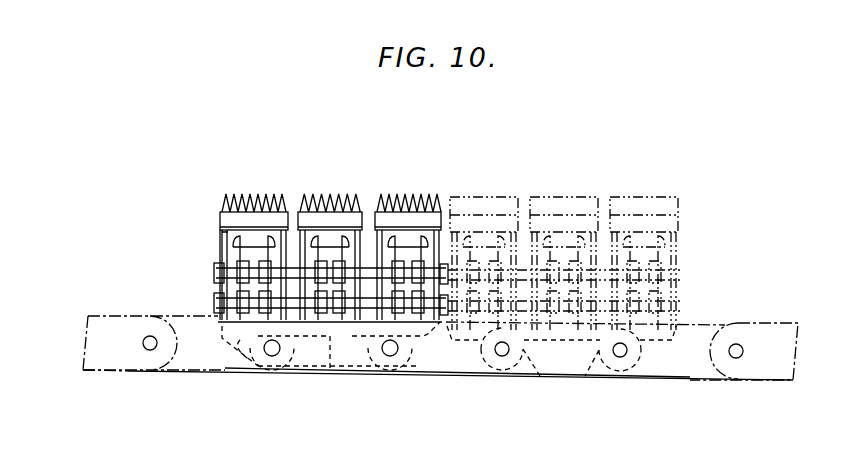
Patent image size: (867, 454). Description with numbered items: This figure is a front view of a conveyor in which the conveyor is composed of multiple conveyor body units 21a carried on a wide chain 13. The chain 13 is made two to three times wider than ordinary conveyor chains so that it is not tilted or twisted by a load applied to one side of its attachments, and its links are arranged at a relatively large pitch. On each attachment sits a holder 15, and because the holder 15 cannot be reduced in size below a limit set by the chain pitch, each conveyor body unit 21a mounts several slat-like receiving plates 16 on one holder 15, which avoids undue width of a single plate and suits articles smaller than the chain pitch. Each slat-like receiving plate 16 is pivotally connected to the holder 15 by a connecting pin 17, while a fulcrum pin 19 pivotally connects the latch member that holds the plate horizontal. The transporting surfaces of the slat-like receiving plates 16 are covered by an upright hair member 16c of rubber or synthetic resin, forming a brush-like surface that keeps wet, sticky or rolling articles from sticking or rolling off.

The chain 13 is at (130, 372).
The holder 15 is at (322, 366).
The slat-like receiving plate 16 is at (282, 212).
The upright hair member 16c is at (220, 199).
The connecting pin 17 is at (216, 271).
The fulcrum pin 19 is at (216, 303).
The conveyor body unit 21a is at (297, 192).